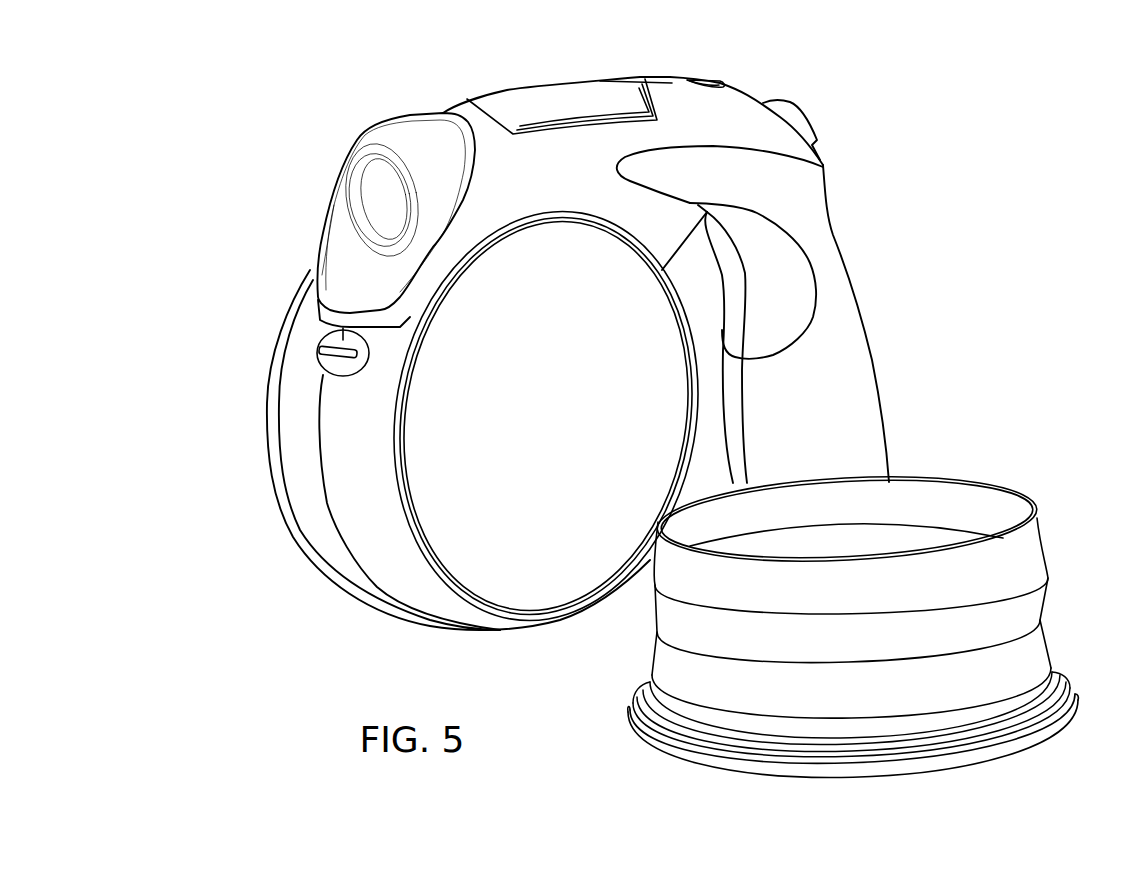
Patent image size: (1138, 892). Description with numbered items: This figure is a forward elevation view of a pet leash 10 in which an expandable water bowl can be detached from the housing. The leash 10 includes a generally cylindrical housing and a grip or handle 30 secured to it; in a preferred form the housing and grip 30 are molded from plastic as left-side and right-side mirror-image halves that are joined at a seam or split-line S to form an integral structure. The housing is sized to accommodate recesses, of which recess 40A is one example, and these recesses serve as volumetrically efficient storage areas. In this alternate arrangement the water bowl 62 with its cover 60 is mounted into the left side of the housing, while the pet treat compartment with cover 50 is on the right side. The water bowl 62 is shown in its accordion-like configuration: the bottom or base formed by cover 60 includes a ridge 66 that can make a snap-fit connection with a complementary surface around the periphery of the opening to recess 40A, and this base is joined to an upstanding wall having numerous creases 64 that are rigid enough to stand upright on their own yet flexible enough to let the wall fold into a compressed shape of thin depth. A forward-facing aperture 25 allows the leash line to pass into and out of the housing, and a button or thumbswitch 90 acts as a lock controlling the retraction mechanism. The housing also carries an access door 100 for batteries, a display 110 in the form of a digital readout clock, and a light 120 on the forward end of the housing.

The pet leash 10 is at (310, 92).
The aperture 25 is at (320, 347).
The grip or handle 30 is at (370, 474).
The recess 40A is at (580, 424).
The cover 50 is at (268, 423).
The cover 60 is at (917, 764).
The water bowl 62 is at (868, 597).
The creases 64 is at (1050, 573).
The ridge 66 is at (635, 703).
The button or thumbswitch 90 is at (790, 102).
The access door 100 is at (546, 90).
The display 110 is at (700, 79).
The light 120 is at (372, 192).
The seam or split-line S is at (360, 577).